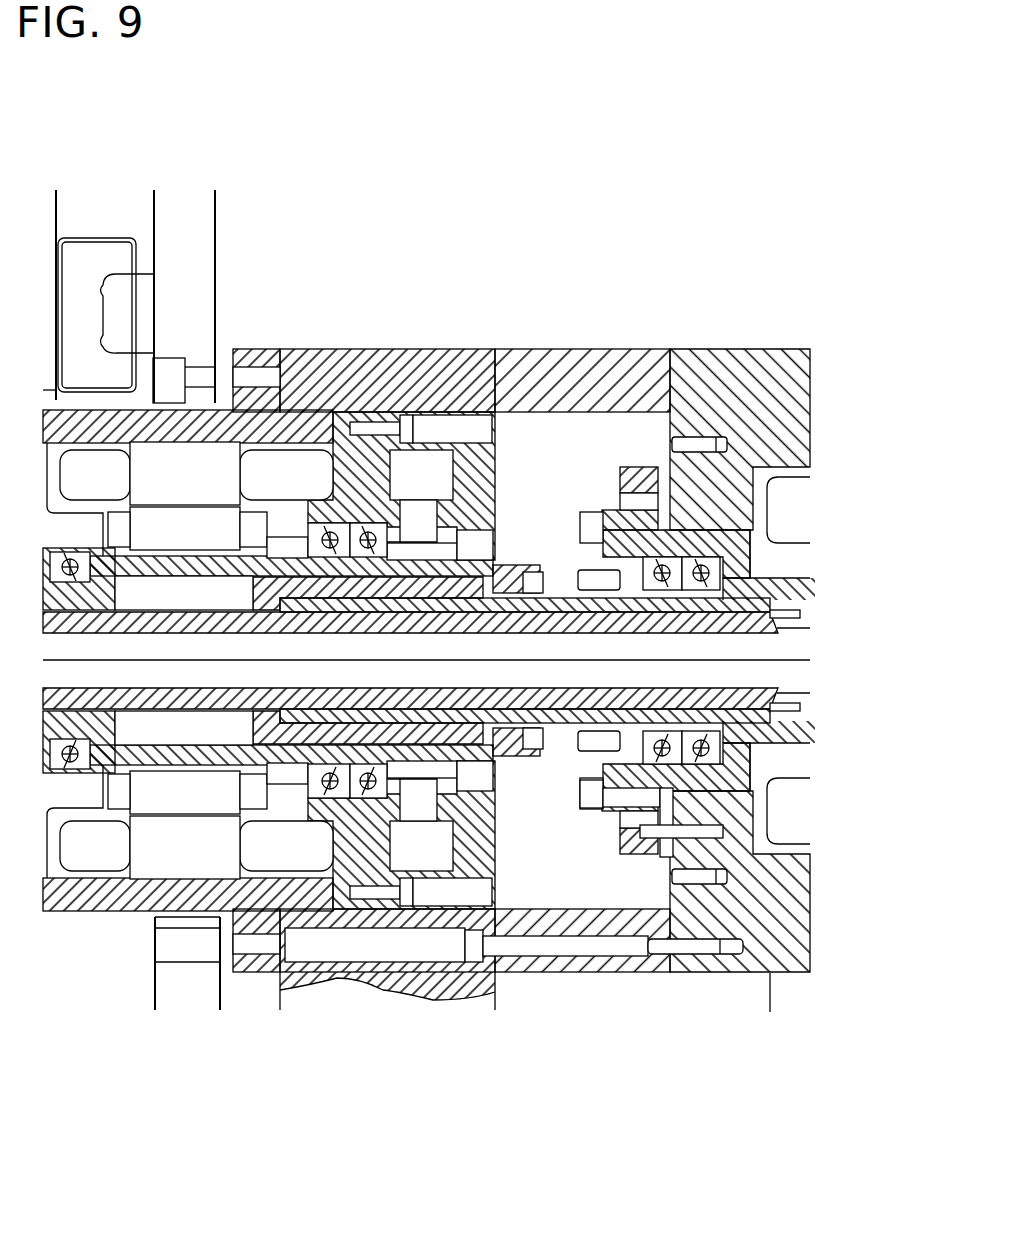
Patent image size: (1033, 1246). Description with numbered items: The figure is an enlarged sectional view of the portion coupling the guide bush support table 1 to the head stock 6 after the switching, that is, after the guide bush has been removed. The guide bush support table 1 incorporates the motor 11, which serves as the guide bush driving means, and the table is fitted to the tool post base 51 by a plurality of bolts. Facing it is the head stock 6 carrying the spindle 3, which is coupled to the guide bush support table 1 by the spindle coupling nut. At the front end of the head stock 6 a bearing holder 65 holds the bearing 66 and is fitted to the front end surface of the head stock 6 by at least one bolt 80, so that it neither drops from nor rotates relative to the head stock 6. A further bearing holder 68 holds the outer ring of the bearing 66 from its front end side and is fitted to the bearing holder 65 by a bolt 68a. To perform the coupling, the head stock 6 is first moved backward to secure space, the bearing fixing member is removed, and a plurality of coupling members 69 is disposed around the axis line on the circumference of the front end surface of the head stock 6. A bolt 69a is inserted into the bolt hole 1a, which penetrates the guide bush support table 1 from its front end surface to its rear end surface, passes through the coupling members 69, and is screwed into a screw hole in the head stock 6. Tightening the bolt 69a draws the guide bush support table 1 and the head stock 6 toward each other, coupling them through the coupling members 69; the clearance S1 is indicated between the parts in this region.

The guide bush support table 1 is at (448, 338).
The bolt hole 1a is at (355, 952).
The spindle 3 is at (800, 566).
The head stock 6 is at (740, 340).
The motor 11 is at (324, 419).
The tool post base 51 is at (192, 207).
The bearing holder 65 is at (643, 483).
The bearing 66 is at (708, 560).
The bearing holder 68 is at (577, 543).
The bolt 68a is at (583, 793).
The coupling member 69 is at (547, 373).
The bolt 69a is at (608, 947).
The bolt 80 is at (673, 806).
The clearance S1 is at (666, 807).